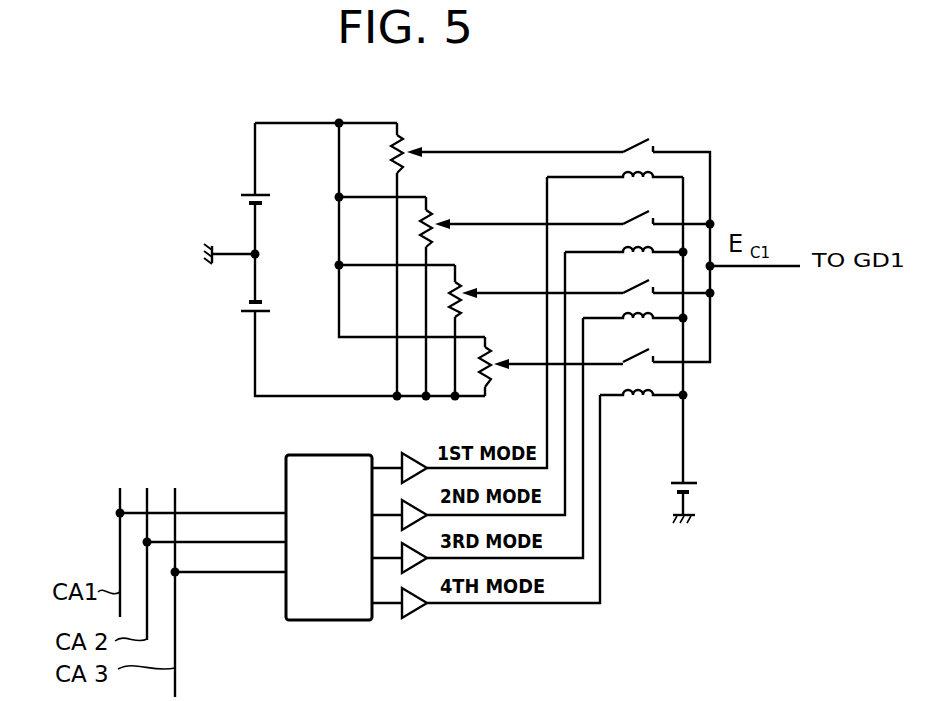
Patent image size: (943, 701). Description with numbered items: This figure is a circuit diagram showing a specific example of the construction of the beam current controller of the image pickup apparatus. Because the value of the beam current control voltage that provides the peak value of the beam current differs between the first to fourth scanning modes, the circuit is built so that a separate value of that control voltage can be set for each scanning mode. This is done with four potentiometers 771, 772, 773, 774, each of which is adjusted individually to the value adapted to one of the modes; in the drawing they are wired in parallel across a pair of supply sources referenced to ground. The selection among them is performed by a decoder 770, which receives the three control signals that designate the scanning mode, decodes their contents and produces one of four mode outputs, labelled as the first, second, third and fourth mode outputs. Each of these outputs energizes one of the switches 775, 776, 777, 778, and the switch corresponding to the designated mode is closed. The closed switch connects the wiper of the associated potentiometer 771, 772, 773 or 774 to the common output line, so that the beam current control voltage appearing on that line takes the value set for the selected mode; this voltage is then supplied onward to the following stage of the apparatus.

The decoder 770 is at (318, 456).
The potentiometer 771 is at (407, 136).
The potentiometer 772 is at (439, 216).
The potentiometer 773 is at (459, 296).
The potentiometer 774 is at (491, 361).
The switch 775 is at (633, 143).
The switch 776 is at (633, 218).
The switch 777 is at (640, 287).
The switch 778 is at (643, 337).